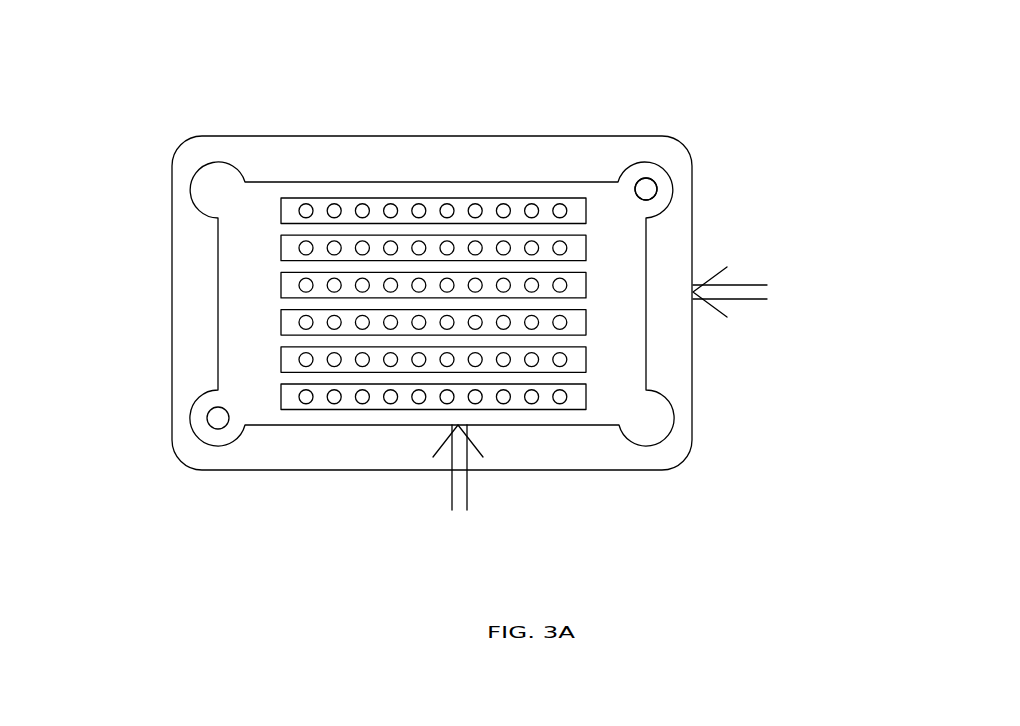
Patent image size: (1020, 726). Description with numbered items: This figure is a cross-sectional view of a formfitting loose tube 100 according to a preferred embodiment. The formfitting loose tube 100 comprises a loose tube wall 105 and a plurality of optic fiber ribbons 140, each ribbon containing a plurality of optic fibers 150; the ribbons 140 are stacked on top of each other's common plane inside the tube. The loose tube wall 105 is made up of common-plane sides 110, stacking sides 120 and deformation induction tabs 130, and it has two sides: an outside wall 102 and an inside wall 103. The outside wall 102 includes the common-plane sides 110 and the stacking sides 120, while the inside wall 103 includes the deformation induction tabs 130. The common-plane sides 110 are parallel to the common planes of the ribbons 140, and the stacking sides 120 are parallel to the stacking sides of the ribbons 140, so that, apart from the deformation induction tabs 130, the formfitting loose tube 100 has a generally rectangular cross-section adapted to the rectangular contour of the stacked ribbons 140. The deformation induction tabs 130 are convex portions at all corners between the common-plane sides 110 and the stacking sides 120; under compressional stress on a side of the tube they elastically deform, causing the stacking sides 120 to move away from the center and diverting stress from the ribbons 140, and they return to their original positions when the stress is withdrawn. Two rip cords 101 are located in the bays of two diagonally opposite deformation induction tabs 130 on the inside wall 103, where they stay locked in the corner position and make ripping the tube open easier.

The formfitting loose tube 100 is at (67, 21).
The rip cord 101 is at (650, 192).
The outside wall 102 is at (748, 292).
The inside wall 103 is at (458, 481).
The loose tube wall 105 is at (830, 353).
The common-plane sides 110 is at (317, 136).
The stacking sides 120 is at (172, 280).
The deformation induction tabs 130 is at (213, 200).
The optic fiber ribbons 140 is at (578, 198).
The optic fibers 150 is at (362, 208).